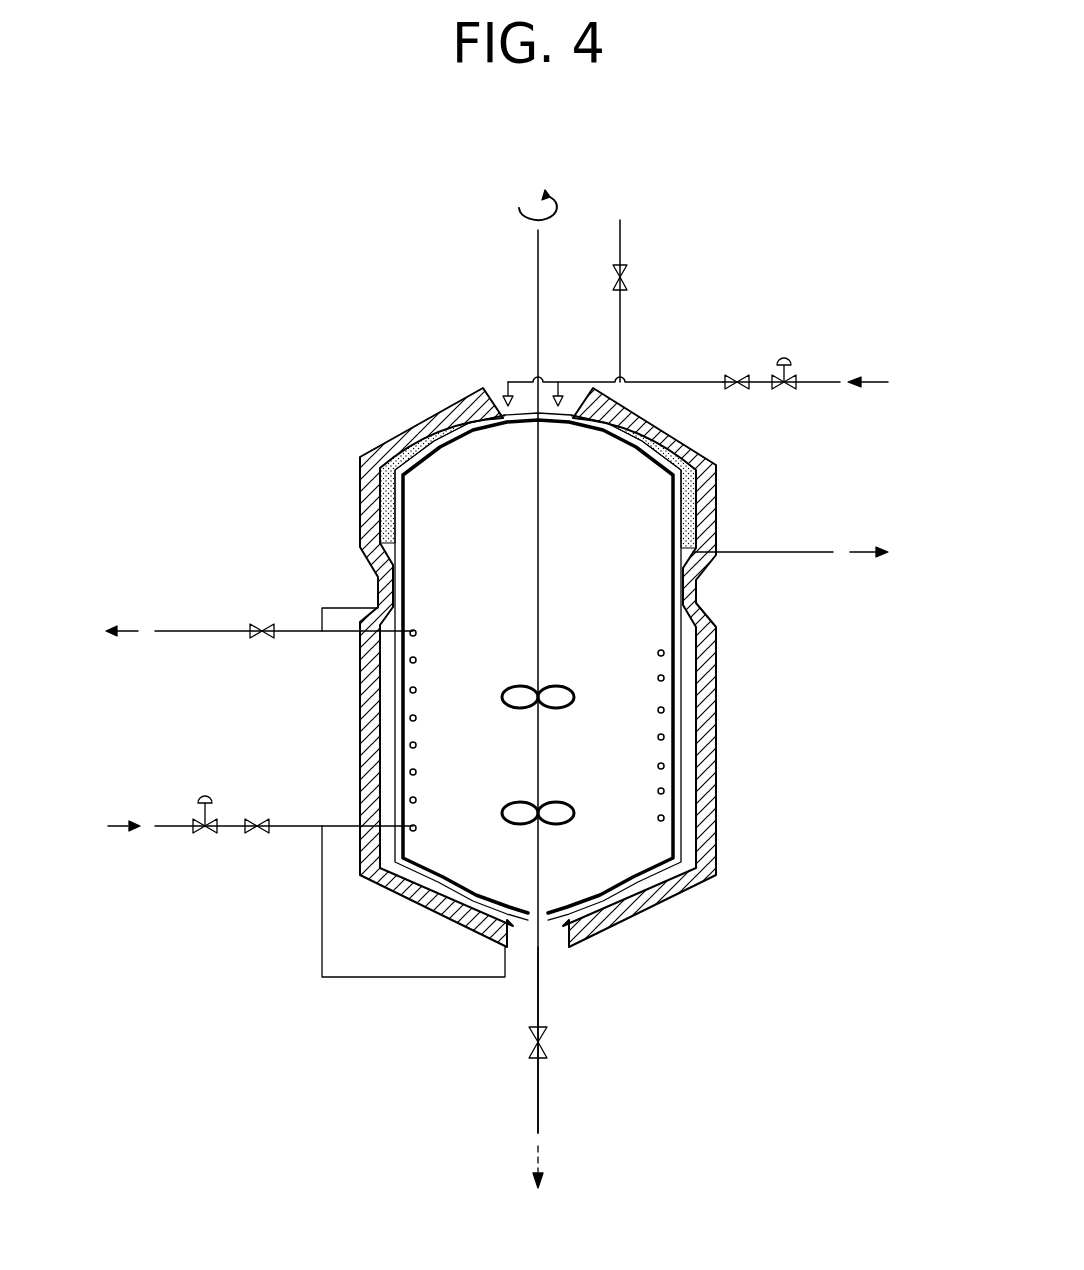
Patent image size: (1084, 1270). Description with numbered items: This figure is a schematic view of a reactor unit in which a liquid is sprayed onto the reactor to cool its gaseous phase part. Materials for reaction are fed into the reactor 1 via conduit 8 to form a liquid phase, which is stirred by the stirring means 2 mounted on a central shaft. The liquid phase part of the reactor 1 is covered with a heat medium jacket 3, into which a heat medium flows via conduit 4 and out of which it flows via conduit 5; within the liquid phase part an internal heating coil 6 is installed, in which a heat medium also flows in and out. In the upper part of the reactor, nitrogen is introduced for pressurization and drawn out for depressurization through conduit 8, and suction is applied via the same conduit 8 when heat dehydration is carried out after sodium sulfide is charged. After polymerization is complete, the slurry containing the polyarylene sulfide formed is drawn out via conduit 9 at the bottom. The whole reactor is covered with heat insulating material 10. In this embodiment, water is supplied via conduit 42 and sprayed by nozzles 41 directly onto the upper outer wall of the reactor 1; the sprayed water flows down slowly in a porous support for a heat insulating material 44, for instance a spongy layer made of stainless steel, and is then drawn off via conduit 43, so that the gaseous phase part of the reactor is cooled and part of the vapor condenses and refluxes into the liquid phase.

The reactor 1 is at (404, 570).
The stirring means 2 is at (567, 688).
The heat medium jacket 3 is at (683, 787).
The conduit 4 is at (175, 832).
The conduit 5 is at (183, 630).
The internal heating coil 6 is at (418, 799).
The conduit 8 is at (622, 241).
The conduit 9 is at (539, 1108).
The heat insulating material 10 is at (708, 704).
The nozzles 41 is at (504, 391).
The conduit 42 is at (692, 384).
The conduit 43 is at (777, 552).
The porous support for a heat insulating material 44 is at (710, 464).